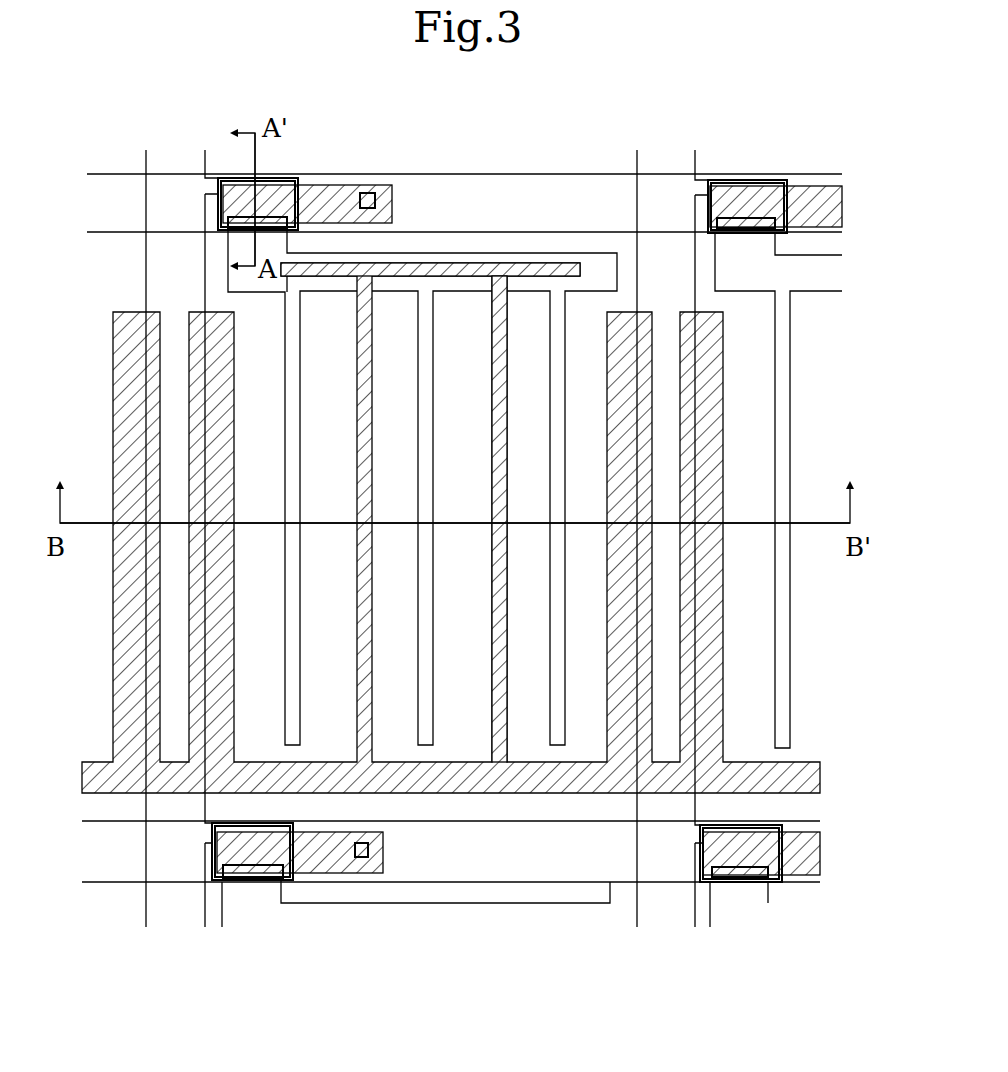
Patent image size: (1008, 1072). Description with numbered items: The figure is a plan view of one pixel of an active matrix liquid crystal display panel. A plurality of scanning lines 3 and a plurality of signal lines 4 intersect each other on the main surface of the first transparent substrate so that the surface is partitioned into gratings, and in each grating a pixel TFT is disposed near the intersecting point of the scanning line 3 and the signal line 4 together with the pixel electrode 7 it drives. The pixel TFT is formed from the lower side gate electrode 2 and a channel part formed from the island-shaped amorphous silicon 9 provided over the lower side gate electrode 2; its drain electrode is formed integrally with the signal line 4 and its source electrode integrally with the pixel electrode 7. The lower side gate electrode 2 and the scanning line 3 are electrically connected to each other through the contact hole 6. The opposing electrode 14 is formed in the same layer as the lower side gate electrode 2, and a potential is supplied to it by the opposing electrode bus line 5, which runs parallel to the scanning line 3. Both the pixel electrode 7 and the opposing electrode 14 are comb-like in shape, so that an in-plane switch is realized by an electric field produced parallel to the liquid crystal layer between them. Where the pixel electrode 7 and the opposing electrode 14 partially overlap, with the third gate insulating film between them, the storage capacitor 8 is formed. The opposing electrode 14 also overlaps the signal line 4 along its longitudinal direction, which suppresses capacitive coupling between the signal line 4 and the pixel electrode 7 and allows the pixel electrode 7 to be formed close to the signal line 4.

The lower side gate electrode 2 is at (337, 185).
The scanning line 3 is at (497, 173).
The signal line 4 is at (147, 268).
The opposing electrode bus line 5 is at (823, 772).
The contact hole 6 is at (356, 880).
The pixel electrode 7 is at (555, 747).
The storage capacitor 8 is at (600, 255).
The island-shaped amorphous silicon 9 is at (212, 884).
The opposing electrode 14 is at (508, 378).